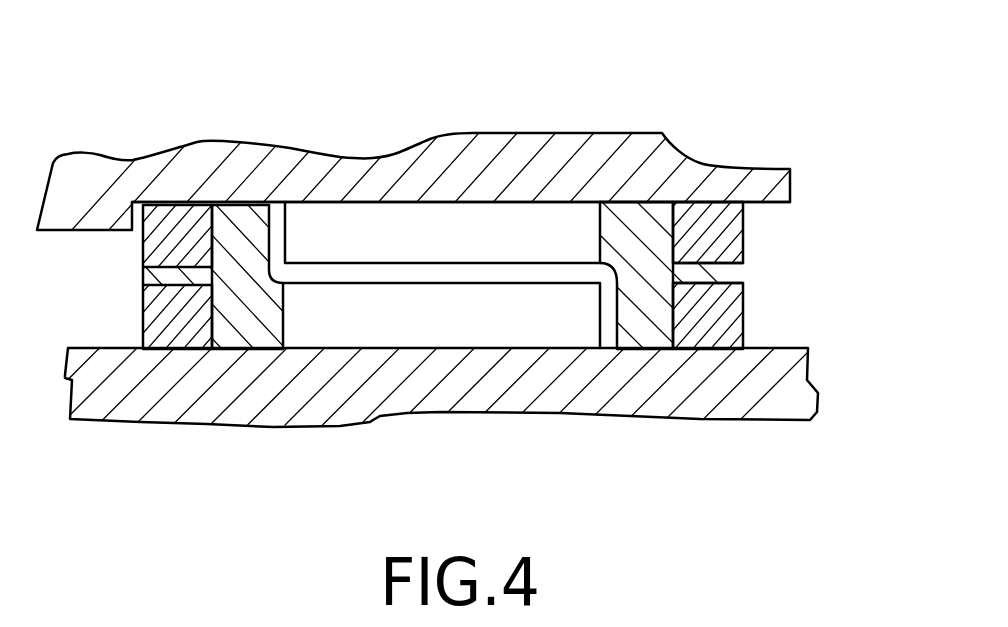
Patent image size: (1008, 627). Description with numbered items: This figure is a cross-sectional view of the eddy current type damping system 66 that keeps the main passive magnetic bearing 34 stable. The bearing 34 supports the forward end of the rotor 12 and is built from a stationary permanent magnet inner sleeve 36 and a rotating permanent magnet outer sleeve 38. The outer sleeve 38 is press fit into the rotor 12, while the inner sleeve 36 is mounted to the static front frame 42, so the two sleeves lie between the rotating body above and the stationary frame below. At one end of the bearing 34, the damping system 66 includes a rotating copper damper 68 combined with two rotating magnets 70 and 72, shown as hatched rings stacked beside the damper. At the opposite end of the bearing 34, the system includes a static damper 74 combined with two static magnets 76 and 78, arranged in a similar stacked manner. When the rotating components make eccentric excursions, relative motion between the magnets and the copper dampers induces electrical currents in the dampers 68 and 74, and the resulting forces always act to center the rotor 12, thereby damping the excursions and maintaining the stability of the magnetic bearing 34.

The rotor 12 is at (686, 160).
The passive magnetic bearing 34 is at (434, 201).
The stationary permanent magnet inner sleeve 36 is at (440, 335).
The rotating permanent magnet outer sleeve 38 is at (440, 246).
The static front frame 42 is at (610, 412).
The eddy current type damping system 66 is at (476, 203).
The rotating copper damper 68 is at (633, 212).
The rotating magnet 70 is at (743, 234).
The rotating magnet 72 is at (743, 309).
The static damper 74 is at (233, 203).
The static magnet 76 is at (143, 252).
The static magnet 78 is at (143, 315).